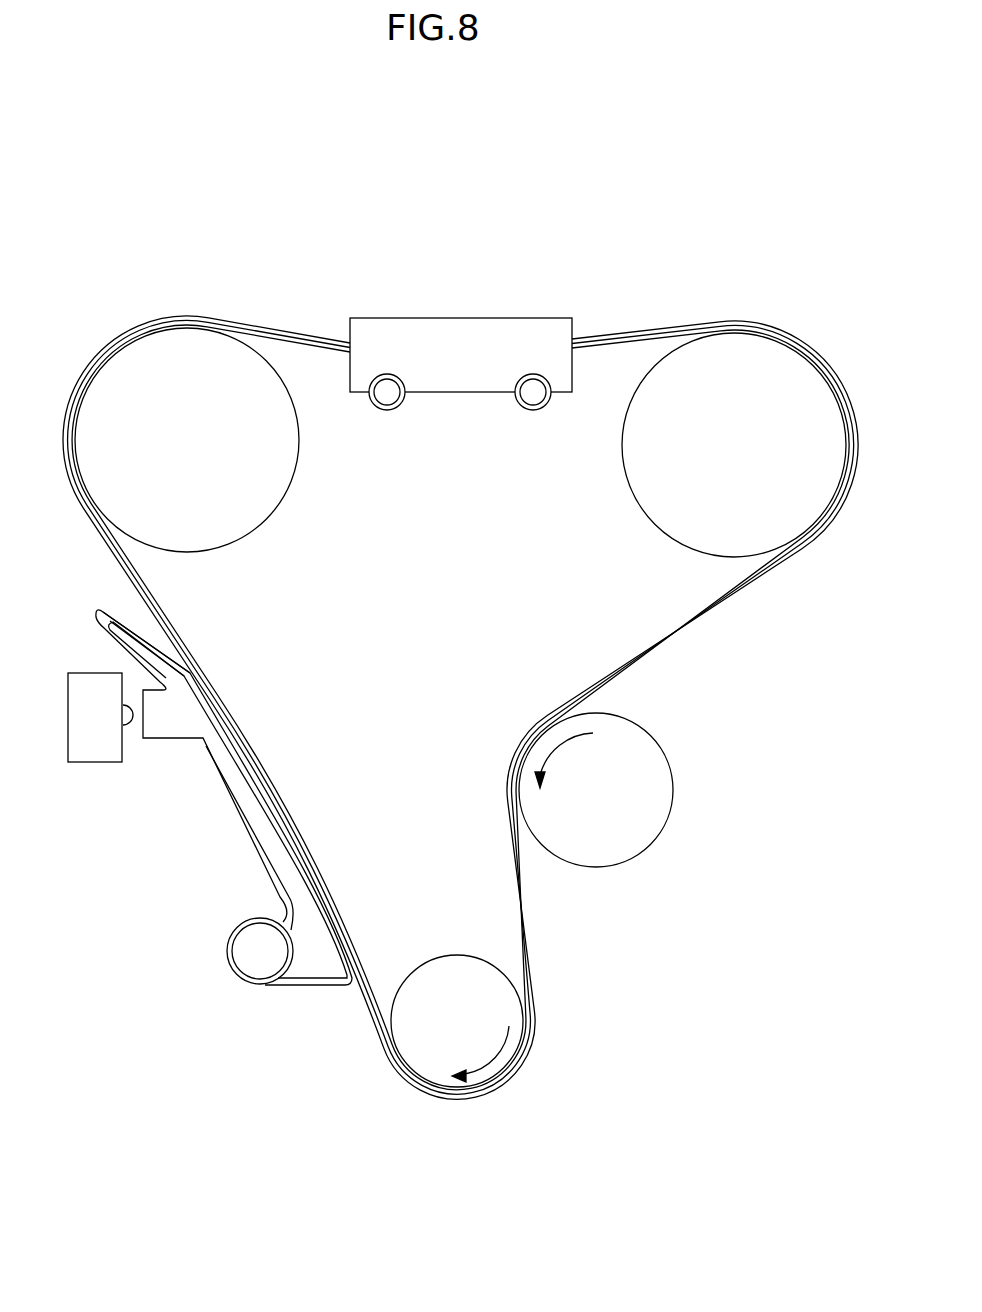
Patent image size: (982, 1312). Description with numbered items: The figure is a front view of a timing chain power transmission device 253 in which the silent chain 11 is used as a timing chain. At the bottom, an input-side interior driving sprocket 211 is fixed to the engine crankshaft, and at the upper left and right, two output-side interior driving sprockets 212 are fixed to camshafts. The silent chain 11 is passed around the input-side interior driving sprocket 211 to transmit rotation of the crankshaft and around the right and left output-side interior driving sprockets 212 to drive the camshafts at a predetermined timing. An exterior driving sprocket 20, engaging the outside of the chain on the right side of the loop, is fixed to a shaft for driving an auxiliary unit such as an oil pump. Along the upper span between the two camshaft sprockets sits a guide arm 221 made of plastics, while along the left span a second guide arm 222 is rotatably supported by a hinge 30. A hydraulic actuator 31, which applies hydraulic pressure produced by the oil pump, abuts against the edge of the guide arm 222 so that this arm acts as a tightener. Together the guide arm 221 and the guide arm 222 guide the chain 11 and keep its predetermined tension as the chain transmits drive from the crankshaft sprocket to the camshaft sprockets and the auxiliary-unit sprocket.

The silent chain 11 is at (692, 617).
The output-side interior driving sprocket 212 is at (248, 512).
The guide arm 221 is at (438, 335).
The timing chain power transmission device 253 is at (658, 257).
The exterior driving sprocket 20 is at (657, 795).
The input-side interior driving sprocket 211 is at (503, 1015).
The guide arm 222 is at (286, 862).
The hinge 30 is at (250, 960).
The hydraulic actuator 31 is at (105, 750).